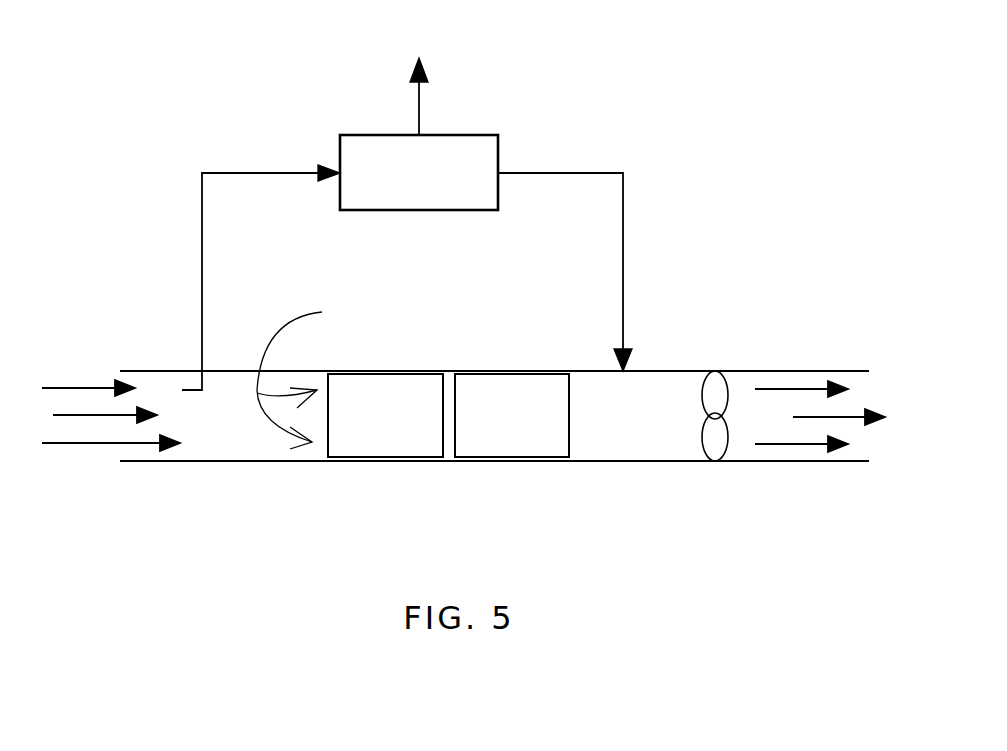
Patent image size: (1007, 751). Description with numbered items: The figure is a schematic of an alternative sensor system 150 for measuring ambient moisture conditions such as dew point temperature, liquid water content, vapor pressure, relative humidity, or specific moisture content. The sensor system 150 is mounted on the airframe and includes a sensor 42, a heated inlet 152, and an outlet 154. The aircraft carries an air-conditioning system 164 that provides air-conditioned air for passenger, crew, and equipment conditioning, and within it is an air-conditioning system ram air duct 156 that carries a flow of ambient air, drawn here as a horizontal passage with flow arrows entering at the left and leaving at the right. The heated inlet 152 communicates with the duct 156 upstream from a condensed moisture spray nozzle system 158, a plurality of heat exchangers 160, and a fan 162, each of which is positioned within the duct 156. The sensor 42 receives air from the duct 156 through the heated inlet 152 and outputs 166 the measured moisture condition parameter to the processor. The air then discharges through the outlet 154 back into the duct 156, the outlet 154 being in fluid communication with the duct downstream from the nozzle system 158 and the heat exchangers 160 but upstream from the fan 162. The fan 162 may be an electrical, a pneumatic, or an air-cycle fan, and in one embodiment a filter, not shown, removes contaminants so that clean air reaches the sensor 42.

The sensor system 150 is at (610, 112).
The heated inlet 152 is at (202, 270).
The outlet 154 is at (623, 228).
The air-conditioning system ram air duct 156 is at (245, 463).
The condensed moisture spray nozzle system 158 is at (311, 374).
The heat exchangers 160 is at (366, 431).
The fan 162 is at (688, 417).
The air-conditioning system 164 is at (412, 473).
The output 166 is at (398, 53).
The sensor 42 is at (406, 188).